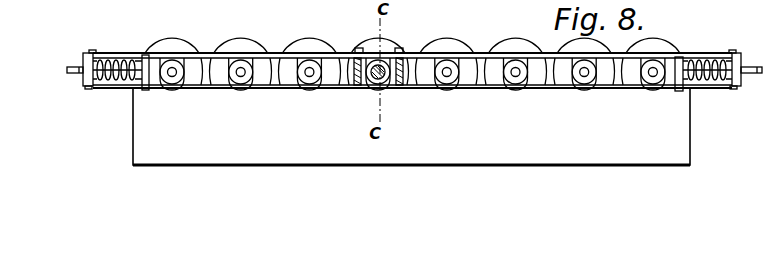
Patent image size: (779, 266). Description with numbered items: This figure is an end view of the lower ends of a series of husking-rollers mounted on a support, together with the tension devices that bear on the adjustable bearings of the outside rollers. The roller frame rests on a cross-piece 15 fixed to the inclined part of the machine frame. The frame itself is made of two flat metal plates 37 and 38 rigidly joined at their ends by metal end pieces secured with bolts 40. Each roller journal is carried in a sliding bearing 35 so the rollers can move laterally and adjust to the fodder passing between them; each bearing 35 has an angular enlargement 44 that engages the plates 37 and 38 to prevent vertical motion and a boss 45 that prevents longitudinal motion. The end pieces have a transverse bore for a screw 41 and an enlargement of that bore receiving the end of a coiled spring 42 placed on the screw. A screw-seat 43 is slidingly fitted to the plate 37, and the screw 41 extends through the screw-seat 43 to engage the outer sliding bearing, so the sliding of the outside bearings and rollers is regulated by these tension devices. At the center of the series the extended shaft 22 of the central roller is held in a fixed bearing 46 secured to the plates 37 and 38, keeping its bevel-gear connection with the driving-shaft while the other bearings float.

The cross-piece 15 is at (411, 126).
The shaft 22 is at (372, 82).
The bearing 35 is at (186, 89).
The plate 37 is at (202, 52).
The plate 38 is at (120, 88).
The bolt 40 is at (97, 50).
The screw 41 is at (72, 75).
The coiled spring 42 is at (122, 66).
The screw-seat 43 is at (146, 90).
The angular enlargement 44 is at (322, 58).
The boss 45 is at (320, 72).
The bearing 46 is at (388, 82).